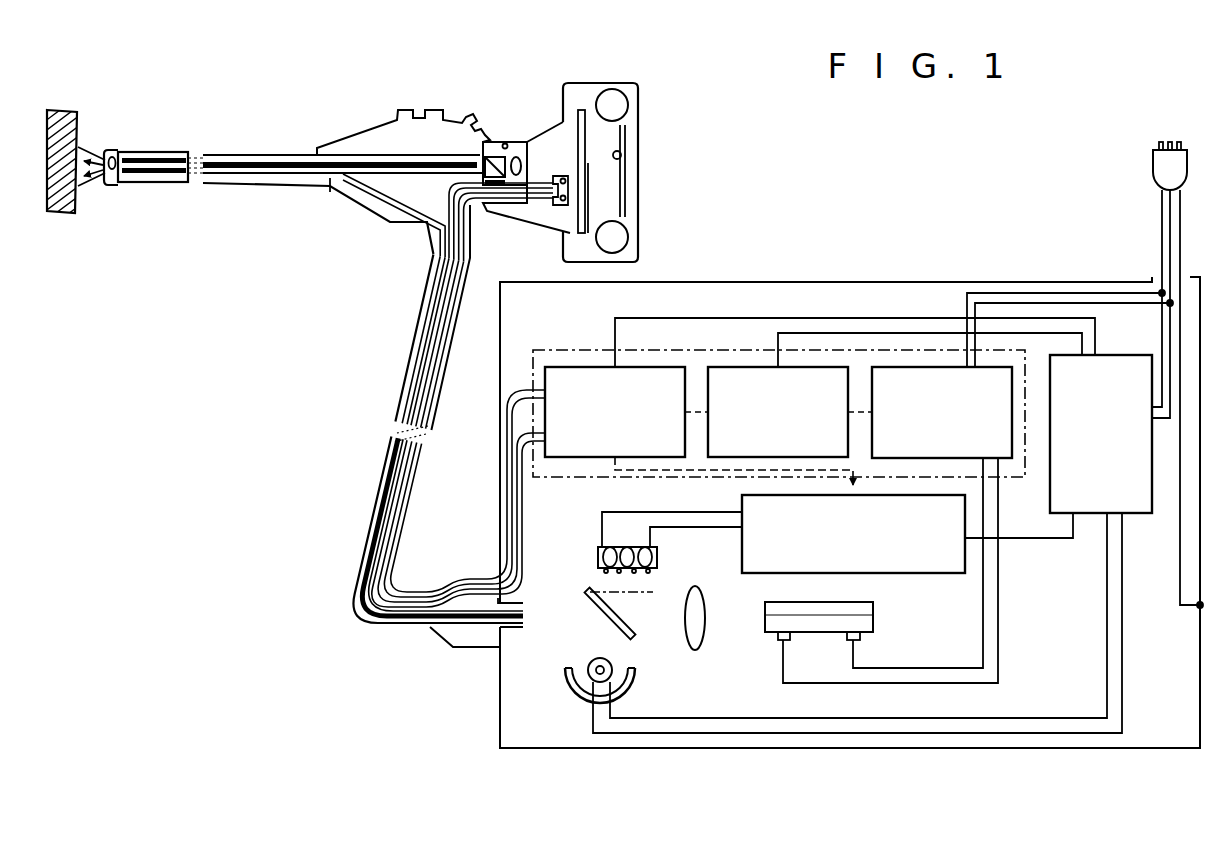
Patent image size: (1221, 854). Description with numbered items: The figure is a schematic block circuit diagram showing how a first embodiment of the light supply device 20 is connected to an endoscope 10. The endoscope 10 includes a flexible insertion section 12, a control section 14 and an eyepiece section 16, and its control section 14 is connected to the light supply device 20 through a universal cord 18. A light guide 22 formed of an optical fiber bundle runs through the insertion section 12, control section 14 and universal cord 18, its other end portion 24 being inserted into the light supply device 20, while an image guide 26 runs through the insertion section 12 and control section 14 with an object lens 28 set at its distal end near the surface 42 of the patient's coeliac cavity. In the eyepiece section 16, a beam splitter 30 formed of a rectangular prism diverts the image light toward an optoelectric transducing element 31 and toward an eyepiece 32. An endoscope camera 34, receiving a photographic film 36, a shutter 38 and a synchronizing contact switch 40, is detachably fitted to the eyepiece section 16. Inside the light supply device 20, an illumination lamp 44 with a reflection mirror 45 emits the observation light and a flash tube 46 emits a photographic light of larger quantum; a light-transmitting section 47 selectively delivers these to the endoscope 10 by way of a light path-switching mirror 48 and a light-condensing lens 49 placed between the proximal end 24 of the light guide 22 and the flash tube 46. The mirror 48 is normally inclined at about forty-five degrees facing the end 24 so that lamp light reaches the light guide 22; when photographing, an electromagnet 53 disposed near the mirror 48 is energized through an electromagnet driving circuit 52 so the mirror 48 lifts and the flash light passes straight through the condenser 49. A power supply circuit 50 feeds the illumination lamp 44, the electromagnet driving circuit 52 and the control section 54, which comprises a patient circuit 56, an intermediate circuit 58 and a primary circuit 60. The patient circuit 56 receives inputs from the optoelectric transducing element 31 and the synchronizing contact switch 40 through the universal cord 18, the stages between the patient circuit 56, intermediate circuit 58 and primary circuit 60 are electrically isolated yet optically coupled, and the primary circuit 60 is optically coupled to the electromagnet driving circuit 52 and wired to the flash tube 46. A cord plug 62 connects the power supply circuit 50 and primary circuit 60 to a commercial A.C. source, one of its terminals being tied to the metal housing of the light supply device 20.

The endoscope 10 is at (281, 130).
The insertion section 12 is at (165, 152).
The control section 14 is at (347, 140).
The eyepiece section 16 is at (505, 143).
The universal cord 18 is at (408, 352).
The light supply device 20 is at (873, 280).
The light guide 22 is at (330, 190).
The other end portion of the light guide 24 is at (523, 618).
The image guide 26 is at (218, 157).
The object lens 28 is at (116, 150).
The beam splitter 30 is at (485, 160).
The optoelectric transducing element 31 is at (551, 190).
The eyepiece 32 is at (522, 166).
The endoscope camera 34 is at (585, 87).
The photographic film 36 is at (623, 157).
The shutter 38 is at (588, 163).
The synchronizing contact switch 40 is at (567, 192).
The surface of a patient's coeliac cavity 42 is at (88, 148).
The illumination lamp 44 is at (612, 665).
The reflection mirror 45 is at (637, 686).
The flash tube 46 is at (873, 624).
The light-transmitting section 47 is at (586, 557).
The light path-switching mirror 48 is at (592, 607).
The light-condensing lens 49 is at (707, 606).
The power supply circuit 50 is at (1136, 515).
The electromagnet driving circuit 52 is at (945, 574).
The electromagnet 53 is at (660, 556).
The control section 54 is at (568, 350).
The patient circuit 56 is at (568, 458).
The intermediate circuit 58 is at (750, 367).
The primary circuit 60 is at (898, 352).
The cord plug 62 is at (1153, 166).